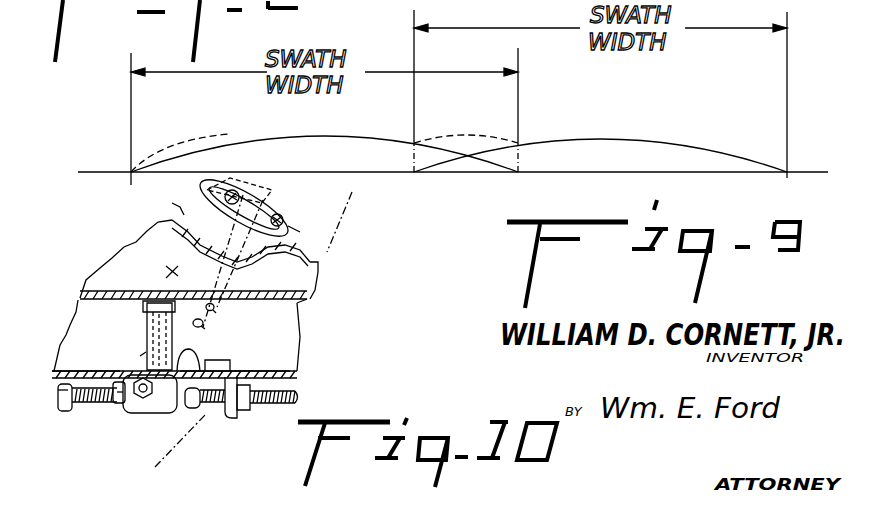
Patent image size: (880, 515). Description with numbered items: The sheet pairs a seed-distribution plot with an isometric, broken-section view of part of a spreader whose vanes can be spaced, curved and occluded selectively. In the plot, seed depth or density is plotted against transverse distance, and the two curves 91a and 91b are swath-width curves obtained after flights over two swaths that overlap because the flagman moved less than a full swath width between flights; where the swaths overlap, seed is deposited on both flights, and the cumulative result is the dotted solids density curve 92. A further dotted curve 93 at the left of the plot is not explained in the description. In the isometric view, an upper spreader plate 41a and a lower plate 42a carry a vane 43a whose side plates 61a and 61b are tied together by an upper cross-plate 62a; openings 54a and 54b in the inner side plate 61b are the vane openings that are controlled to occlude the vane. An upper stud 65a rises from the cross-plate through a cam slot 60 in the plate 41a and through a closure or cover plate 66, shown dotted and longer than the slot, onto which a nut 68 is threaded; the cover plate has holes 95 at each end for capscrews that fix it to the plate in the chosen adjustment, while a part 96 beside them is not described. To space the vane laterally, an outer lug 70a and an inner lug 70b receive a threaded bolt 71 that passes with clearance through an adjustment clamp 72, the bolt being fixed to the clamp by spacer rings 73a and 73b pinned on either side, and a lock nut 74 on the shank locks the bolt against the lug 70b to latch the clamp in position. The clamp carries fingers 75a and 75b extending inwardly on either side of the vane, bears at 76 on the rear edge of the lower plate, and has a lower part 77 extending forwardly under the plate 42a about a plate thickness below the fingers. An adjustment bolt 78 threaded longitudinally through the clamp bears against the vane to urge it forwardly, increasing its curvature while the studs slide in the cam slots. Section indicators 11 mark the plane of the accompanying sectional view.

In FIG. 10, the section line 11 is at (362, 215).
In FIG. 10, the upper spreader plate 41a is at (127, 266).
In FIG. 10, the lower plate 42a is at (297, 347).
In FIG. 10, the vane 43a is at (148, 323).
In FIG. 10, the vane opening 54a is at (208, 327).
In FIG. 10, the vane opening 54b is at (218, 309).
In FIG. 10, the cam slot 60 is at (276, 210).
In FIG. 10, the side plate 61a is at (150, 341).
In FIG. 10, the side plate 61b is at (207, 290).
In FIG. 10, the upper cross-plate 62a is at (172, 270).
In FIG. 10, the upper stud 65a is at (266, 192).
In FIG. 10, the closure plate 66 is at (180, 208).
In FIG. 10, the nut 68 is at (232, 209).
In FIG. 10, the outer adjustment lug 70a is at (65, 407).
In FIG. 10, the inner adjustment lug 70b is at (280, 395).
In FIG. 10, the threaded bolt 71 is at (56, 391).
In FIG. 10, the adjustment clamp 72 is at (160, 403).
In FIG. 10, the spacer ring 73a is at (118, 402).
In FIG. 10, the spacer ring 73b is at (178, 413).
In FIG. 10, the lock nut 74 is at (238, 412).
In FIG. 10, the finger 75a is at (140, 356).
In FIG. 10, the finger 75b is at (205, 352).
In FIG. 10, the bearing point 76 is at (194, 371).
In FIG. 10, the lower part of clamp 77 is at (231, 372).
In FIG. 10, the adjustment screw 78 is at (137, 402).
In FIG. 9, the swath width curve 91a is at (386, 116).
In FIG. 9, the swath width curve 91b is at (694, 125).
In FIG. 9, the solids density curve 92 is at (470, 133).
In FIG. 9, the swath arc 93 is at (204, 137).
In FIG. 10, the holes 95 is at (285, 218).
In FIG. 10, the bolt 96 is at (292, 224).